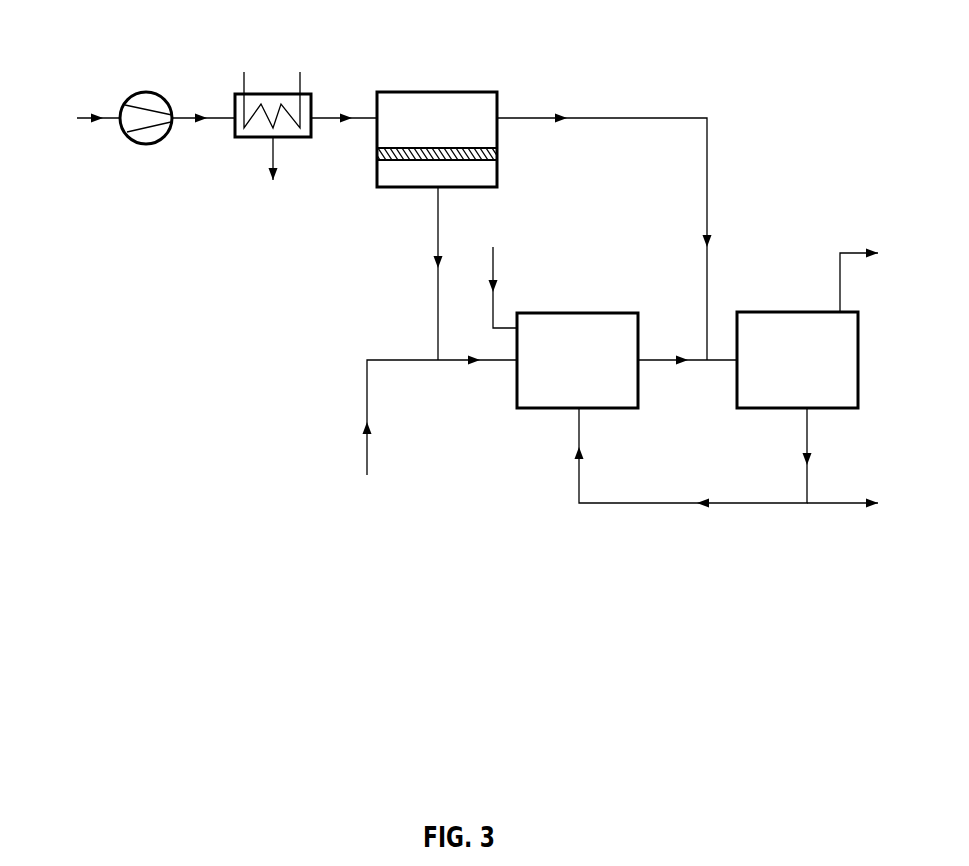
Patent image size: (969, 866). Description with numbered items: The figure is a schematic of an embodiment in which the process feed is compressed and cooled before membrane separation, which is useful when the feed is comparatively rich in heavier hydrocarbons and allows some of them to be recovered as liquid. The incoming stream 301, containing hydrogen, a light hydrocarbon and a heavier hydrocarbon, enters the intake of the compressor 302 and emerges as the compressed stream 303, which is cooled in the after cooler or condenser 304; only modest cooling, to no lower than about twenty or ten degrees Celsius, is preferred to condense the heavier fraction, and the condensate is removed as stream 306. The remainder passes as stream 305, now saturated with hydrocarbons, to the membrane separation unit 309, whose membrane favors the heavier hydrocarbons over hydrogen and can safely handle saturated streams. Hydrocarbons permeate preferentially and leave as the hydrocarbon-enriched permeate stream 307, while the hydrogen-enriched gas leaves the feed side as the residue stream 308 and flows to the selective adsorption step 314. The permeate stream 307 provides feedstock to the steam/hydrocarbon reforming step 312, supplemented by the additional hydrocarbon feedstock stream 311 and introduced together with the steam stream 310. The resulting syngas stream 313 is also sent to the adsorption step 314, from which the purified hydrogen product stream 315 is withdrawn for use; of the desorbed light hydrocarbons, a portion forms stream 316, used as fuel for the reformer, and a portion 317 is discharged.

The incoming stream 301 is at (76, 119).
The compressor 302 is at (140, 143).
The compressed stream 303 is at (203, 105).
The after cooler or condenser 304 is at (247, 138).
The stream to membrane separation 305 is at (344, 104).
The condensate stream 306 is at (272, 174).
The hydrocarbon-enriched permeate stream 307 is at (415, 273).
The residue stream 308 is at (604, 222).
The membrane separation unit 309 is at (460, 92).
The steam stream 310 is at (494, 275).
The additional hydrocarbon feedstock stream 311 is at (432, 431).
The steam/hydrocarbon reforming step 312 is at (522, 410).
The syngas stream 313 is at (687, 375).
The selective adsorption step 314 is at (848, 410).
The purified hydrogen product stream 315 is at (880, 277).
The desorbed hydrocarbon fuel stream 316 is at (693, 474).
The discharged desorbed hydrocarbon stream 317 is at (864, 505).